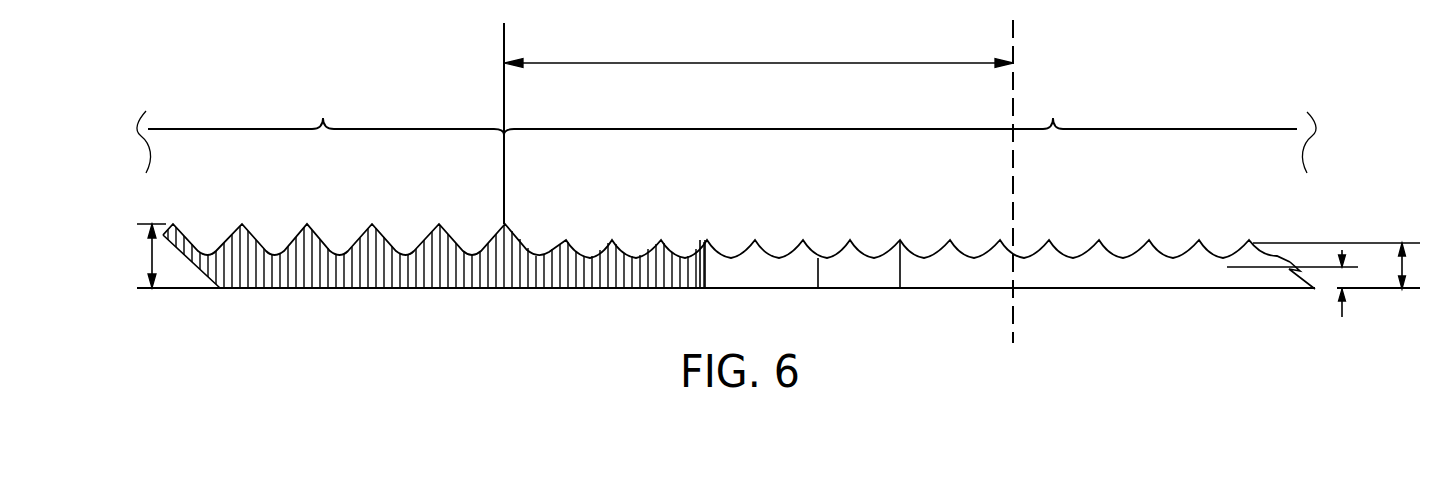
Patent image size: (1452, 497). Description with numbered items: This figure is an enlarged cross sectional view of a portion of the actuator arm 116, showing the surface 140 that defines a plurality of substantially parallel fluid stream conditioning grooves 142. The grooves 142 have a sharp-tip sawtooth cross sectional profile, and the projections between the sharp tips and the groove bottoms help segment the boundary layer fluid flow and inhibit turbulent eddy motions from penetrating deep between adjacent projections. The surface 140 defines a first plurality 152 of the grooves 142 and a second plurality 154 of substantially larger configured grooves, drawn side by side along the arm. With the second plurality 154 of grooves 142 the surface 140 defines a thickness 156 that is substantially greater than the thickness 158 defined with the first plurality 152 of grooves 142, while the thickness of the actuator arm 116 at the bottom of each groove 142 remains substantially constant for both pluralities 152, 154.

The actuator arm 116 is at (1245, 288).
The surface 140 is at (930, 256).
The fluid stream conditioning grooves 142 is at (406, 239).
The first plurality of grooves 152 is at (1053, 118).
The second plurality of grooves 154 is at (323, 118).
The thickness 156 is at (152, 257).
The thickness 158 is at (1405, 262).